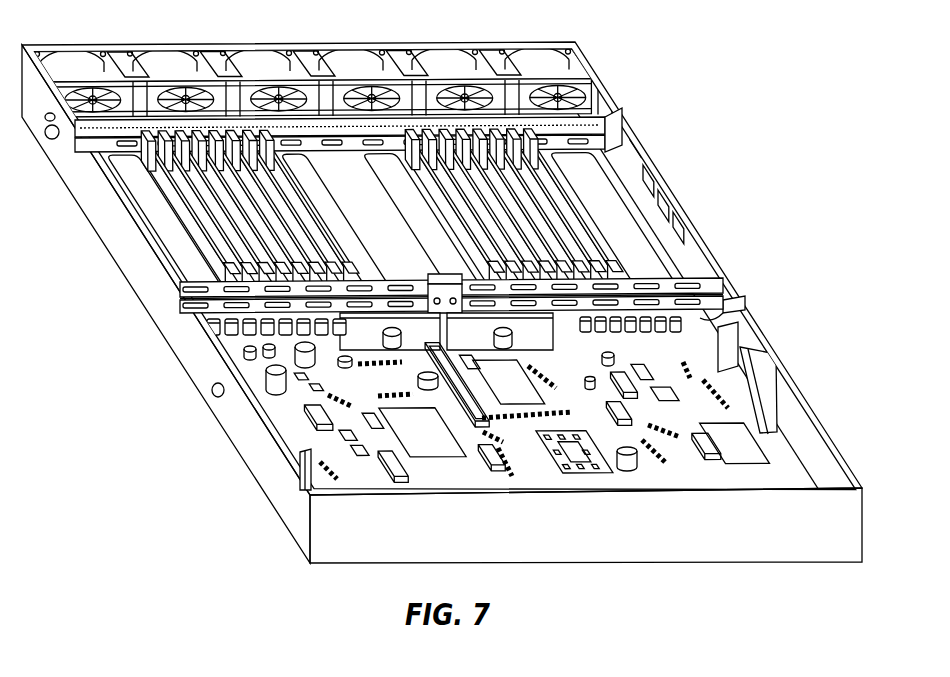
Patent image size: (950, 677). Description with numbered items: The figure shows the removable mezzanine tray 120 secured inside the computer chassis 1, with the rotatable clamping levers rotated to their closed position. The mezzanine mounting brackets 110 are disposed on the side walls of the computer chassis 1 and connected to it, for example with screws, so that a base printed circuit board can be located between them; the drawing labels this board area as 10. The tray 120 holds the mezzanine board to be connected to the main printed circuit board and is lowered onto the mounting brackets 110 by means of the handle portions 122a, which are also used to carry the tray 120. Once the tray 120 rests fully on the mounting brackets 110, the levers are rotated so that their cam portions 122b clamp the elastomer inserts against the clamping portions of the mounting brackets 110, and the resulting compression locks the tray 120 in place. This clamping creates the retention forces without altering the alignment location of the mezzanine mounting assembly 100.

The computer chassis 1 is at (804, 398).
The motherboard 10 is at (678, 406).
The mezzanine mounting assembly 100 is at (442, 302).
The mezzanine mounting brackets 110 is at (669, 172).
The removable mezzanine tray 120 is at (667, 249).
The handle portions 122a is at (668, 272).
The cam portions 122b is at (619, 115).